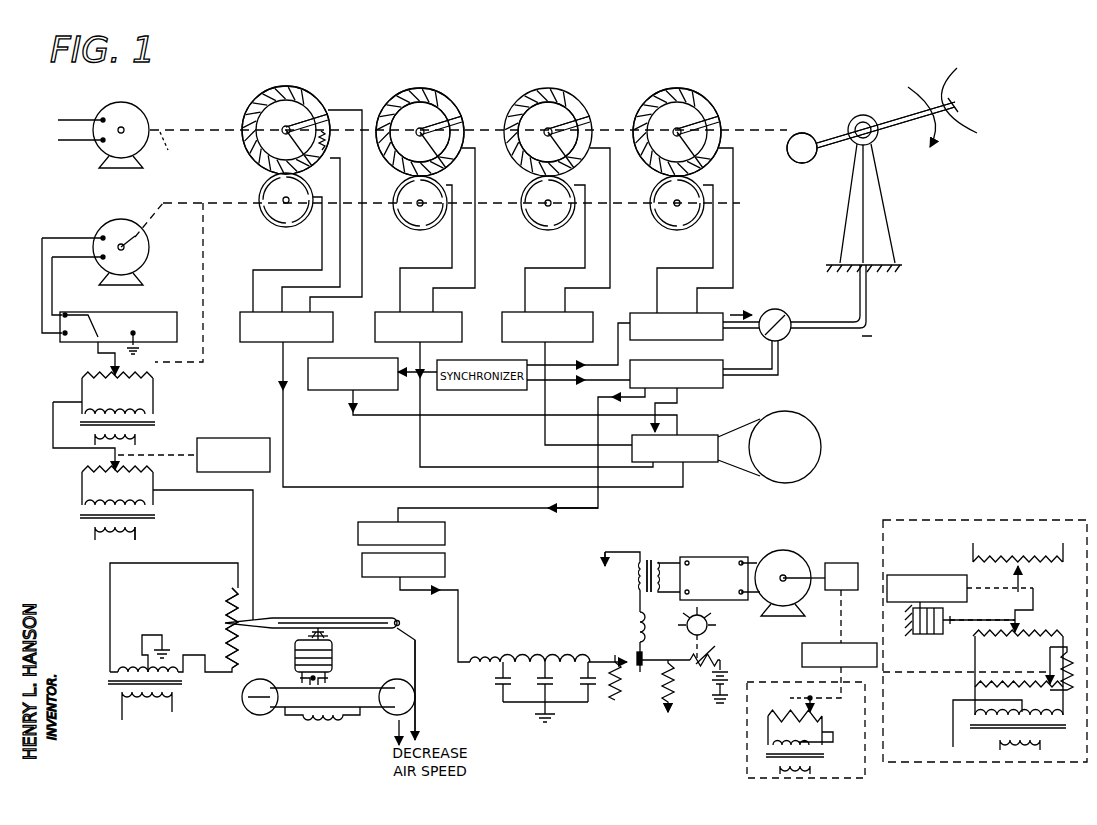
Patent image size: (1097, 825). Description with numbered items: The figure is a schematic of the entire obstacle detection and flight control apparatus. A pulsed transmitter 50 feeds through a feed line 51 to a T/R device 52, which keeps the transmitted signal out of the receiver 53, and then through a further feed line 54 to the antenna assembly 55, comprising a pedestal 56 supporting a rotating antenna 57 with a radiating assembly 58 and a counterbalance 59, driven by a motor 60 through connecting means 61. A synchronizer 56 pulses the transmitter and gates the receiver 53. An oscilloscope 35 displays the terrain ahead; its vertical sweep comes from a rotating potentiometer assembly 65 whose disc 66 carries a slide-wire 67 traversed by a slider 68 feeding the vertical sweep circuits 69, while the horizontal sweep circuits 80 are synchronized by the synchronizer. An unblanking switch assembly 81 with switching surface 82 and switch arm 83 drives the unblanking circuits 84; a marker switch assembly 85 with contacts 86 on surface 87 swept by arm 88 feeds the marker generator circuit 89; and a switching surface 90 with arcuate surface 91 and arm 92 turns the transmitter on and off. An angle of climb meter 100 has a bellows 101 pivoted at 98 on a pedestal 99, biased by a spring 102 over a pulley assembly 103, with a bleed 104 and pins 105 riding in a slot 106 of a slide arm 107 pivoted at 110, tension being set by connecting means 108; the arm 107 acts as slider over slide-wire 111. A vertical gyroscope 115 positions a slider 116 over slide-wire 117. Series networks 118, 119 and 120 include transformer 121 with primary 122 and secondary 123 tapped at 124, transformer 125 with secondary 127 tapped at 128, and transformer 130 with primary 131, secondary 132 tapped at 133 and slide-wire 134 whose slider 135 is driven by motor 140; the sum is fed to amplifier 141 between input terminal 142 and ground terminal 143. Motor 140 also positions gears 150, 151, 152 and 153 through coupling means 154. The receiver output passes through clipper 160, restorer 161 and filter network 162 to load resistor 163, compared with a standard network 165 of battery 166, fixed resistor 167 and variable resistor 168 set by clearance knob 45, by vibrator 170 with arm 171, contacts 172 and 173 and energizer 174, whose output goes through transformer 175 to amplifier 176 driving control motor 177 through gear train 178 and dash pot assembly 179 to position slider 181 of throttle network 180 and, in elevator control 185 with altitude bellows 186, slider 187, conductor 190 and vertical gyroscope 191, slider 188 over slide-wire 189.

The oscilloscope 35 is at (800, 478).
The clearance adjusting knob 45 is at (710, 630).
The transmitter 50 is at (642, 313).
The feed line 51 is at (742, 333).
The T/R device 52 is at (786, 338).
The receiver 53 is at (717, 388).
The feed line 54 is at (858, 334).
The antenna assembly 55 is at (778, 372).
The pedestal 56 is at (878, 232).
The rotating antenna 57 is at (902, 118).
The radiating assembly 58 is at (975, 99).
The counterbalance 59 is at (800, 163).
The motor 60 is at (140, 112).
The connecting means 61 is at (172, 147).
The rotating potentiometer assembly 65 is at (305, 87).
The rotatable disc 66 is at (266, 93).
The slide-wire resistor 67 is at (330, 143).
The slider 68 is at (330, 108).
The vertical sweep circuits 69 is at (262, 343).
The horizontal sweep circuits 80 is at (328, 391).
The unblanking switch assembly 81 is at (578, 90).
The switching surface 82 is at (593, 118).
The switch arm 83 is at (548, 132).
The unblanking circuits 84 is at (504, 314).
The marker switch assembly 85 is at (448, 90).
The switch contacts 86 is at (460, 120).
The switch surface 87 is at (412, 90).
The switch arm 88 is at (420, 132).
The marker generator circuit 89 is at (388, 312).
The switching surface 90 is at (722, 98).
The arcuate surface 91 is at (686, 90).
The switch arm 92 is at (722, 118).
The pivot 98 is at (308, 683).
The pedestal 99 is at (330, 690).
The angle of climb meter 100 is at (270, 730).
The bellows 101 is at (333, 654).
The spring member 102 is at (318, 722).
The pulley assembly 103 is at (248, 692).
The bleed 104 is at (304, 638).
The pins 105 is at (324, 626).
The slot 106 is at (318, 626).
The slotted slide arm 107 is at (278, 616).
The connecting means 108 is at (418, 730).
The pivot 110 is at (400, 618).
The slide-wire 111 is at (228, 600).
The vertical gyroscope 115 is at (235, 438).
The slider 116 is at (110, 455).
The slide-wire resistor 117 is at (82, 478).
The network 118 is at (165, 646).
The network 119 is at (146, 543).
The follow up network 120 is at (112, 421).
The transformer 121 is at (116, 692).
The primary winding 122 is at (170, 704).
The secondary winding 123 is at (128, 665).
The tap 124 is at (162, 652).
The transformer 125 is at (155, 520).
The secondary winding 127 is at (86, 505).
The tap 128 is at (96, 530).
The transformer 130 is at (150, 427).
The primary winding 131 is at (96, 436).
The secondary winding 132 is at (150, 412).
The tap 133 is at (70, 398).
The slide-wire 134 is at (150, 380).
The slider 135 is at (108, 356).
The controlled motor 140 is at (118, 220).
The amplifier 141 is at (154, 312).
The input terminal 142 is at (86, 312).
The ground terminal 143 is at (142, 344).
The gear 150 is at (283, 227).
The gear 151 is at (425, 230).
The gear 152 is at (553, 230).
The gear 153 is at (680, 230).
The coupling means 154 is at (180, 198).
The clipper 160 is at (445, 533).
The D. C. restorer 161 is at (445, 567).
The filter network 162 is at (533, 673).
The output load resistor 163 is at (612, 702).
The network 165 is at (688, 712).
The battery 166 is at (712, 686).
The fixed resistor 167 is at (668, 712).
The variable resistor 168 is at (722, 660).
The vibrator 170 is at (634, 642).
The vibrating arm 171 is at (644, 652).
The contact 172 is at (630, 664).
The contact 173 is at (664, 676).
The energizer 174 is at (636, 612).
The transformer 175 is at (653, 548).
The amplifier 176 is at (716, 557).
The control motor 177 is at (790, 552).
The gear train 178 is at (843, 590).
The dash pot assembly 179 is at (822, 643).
The throttle control network 180 is at (824, 720).
The slider 181 is at (787, 698).
The elevator control 185 is at (985, 641).
The altitude responsive bellows 186 is at (916, 636).
The slider 187 is at (1020, 618).
The slider 188 is at (1048, 655).
The slide-wire 189 is at (1022, 692).
The conductor 190 is at (953, 720).
The vertical gyroscope 191 is at (906, 575).